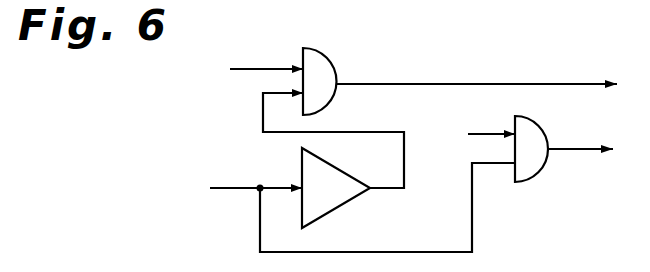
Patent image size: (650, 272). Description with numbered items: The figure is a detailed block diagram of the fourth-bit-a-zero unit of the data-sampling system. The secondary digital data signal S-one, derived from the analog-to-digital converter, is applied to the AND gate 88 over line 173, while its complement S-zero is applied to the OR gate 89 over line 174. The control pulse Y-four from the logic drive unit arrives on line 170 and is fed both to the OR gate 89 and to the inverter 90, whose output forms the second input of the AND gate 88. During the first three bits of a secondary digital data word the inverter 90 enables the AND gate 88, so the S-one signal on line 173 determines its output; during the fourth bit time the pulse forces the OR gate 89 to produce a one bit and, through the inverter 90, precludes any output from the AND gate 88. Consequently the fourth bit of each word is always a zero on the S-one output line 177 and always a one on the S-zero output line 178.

The AND gate 88 is at (328, 60).
The OR gate 89 is at (532, 172).
The inverter 90 is at (333, 207).
The line 170 is at (226, 186).
The line 173 is at (250, 68).
The line 174 is at (483, 133).
The S-"1" output line 177 is at (458, 84).
The S-"0" output line 178 is at (572, 148).